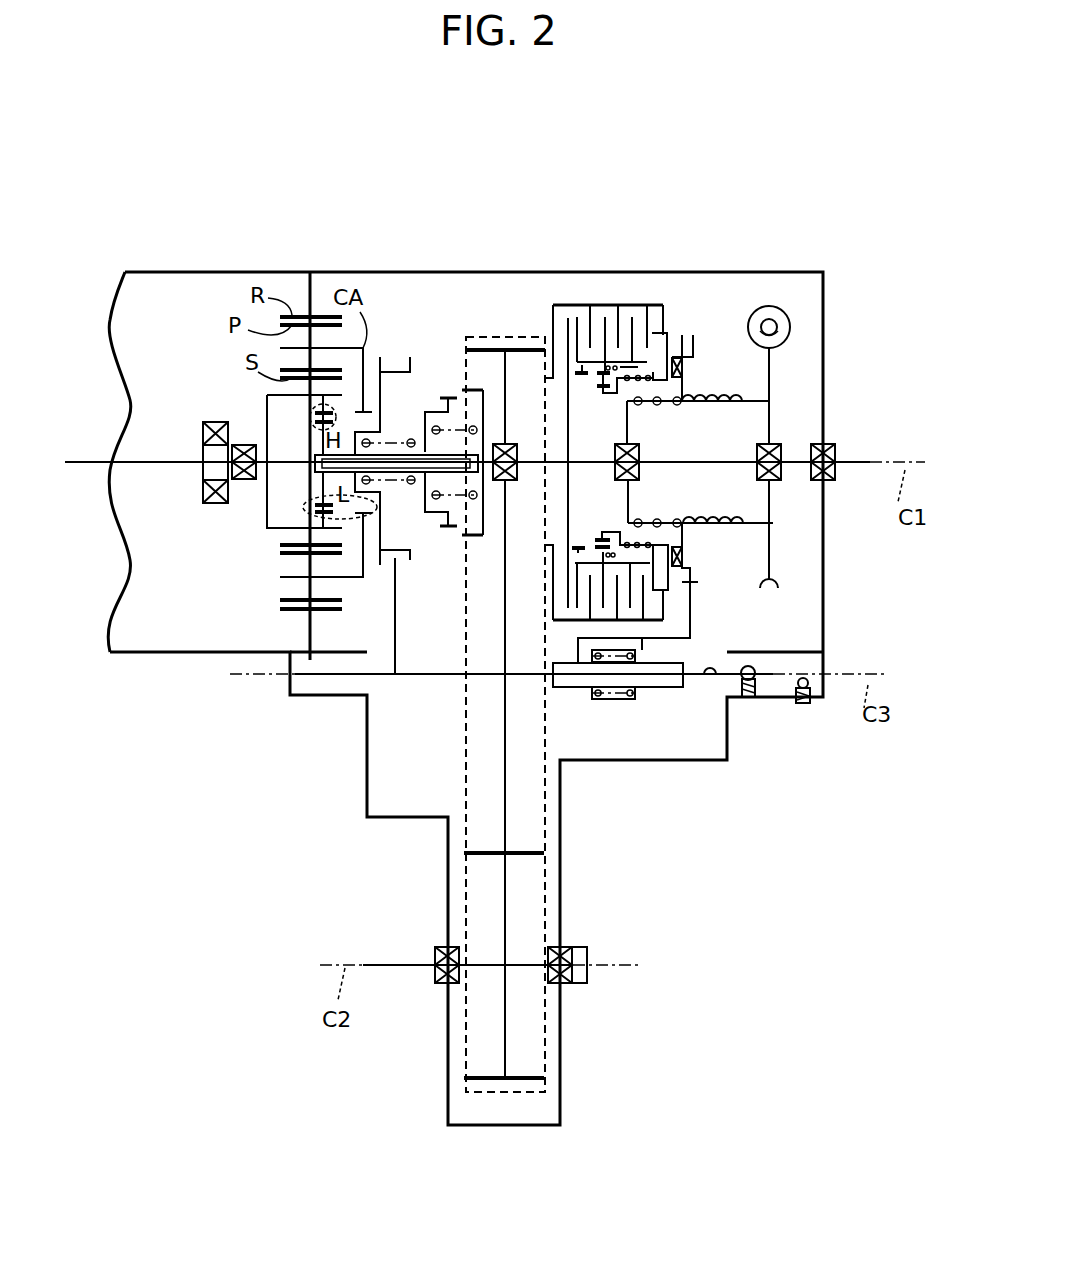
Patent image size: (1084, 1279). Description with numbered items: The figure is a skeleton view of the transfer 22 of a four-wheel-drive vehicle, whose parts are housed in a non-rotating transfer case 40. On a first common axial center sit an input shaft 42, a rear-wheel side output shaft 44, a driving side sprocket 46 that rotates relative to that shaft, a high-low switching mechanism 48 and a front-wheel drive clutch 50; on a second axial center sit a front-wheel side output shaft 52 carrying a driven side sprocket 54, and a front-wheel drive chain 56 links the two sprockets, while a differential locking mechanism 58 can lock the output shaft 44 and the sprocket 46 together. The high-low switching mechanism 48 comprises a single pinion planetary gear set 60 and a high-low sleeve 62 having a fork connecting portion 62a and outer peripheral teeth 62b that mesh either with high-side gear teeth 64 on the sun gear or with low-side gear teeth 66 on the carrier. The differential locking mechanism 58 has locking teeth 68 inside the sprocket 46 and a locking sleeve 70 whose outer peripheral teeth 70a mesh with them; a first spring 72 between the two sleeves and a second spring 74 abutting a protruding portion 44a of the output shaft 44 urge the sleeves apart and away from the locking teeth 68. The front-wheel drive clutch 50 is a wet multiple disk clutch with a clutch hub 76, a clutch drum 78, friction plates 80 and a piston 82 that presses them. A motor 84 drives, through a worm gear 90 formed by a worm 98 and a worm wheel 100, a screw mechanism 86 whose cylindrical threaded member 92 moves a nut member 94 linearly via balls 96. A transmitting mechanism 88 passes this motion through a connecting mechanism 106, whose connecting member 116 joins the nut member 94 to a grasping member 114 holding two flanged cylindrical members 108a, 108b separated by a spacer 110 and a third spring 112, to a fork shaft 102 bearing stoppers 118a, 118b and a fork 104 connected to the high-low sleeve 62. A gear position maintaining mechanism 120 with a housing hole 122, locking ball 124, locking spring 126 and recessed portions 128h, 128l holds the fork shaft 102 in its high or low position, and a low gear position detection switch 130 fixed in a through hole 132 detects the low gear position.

The transfer 22 is at (757, 130).
The transfer case 40 is at (228, 272).
The input shaft 42 is at (163, 462).
The rear-wheel side output shaft 44 is at (845, 462).
The protruding portion 44a is at (484, 402).
The driving side sprocket 46 is at (478, 350).
The high-low switching mechanism 48 is at (370, 196).
The front-wheel drive clutch 50 is at (603, 293).
The front-wheel side output shaft 52 is at (392, 963).
The driven side sprocket 54 is at (493, 855).
The front-wheel drive chain 56 is at (465, 1050).
The differential locking mechanism 58 is at (447, 351).
The planetary gear set 60 is at (310, 256).
The high-low sleeve 62 is at (378, 370).
The fork connecting portion 62a is at (396, 356).
The outer peripheral teeth 62b is at (373, 456).
The high-side gear teeth 64 is at (320, 415).
The low-side gear teeth 66 is at (370, 527).
The locking teeth 68 is at (466, 394).
The locking sleeve 70 is at (440, 412).
The outer peripheral teeth 70a is at (449, 397).
The first spring 72 is at (412, 483).
The second spring 74 is at (473, 503).
The clutch hub 76 is at (583, 388).
The clutch drum 78 is at (622, 305).
The friction plates 80 is at (660, 323).
The piston 82 is at (667, 335).
The motor 84 is at (757, 306).
The screw mechanism 86 is at (725, 327).
The transmitting mechanism 88 is at (706, 738).
The worm gear 90 is at (808, 289).
The cylindrical threaded member 92 is at (705, 395).
The nut member 94 is at (688, 383).
The balls 96 is at (645, 405).
The worm 98 is at (775, 319).
The worm wheel 100 is at (770, 370).
The fork shaft 102 is at (425, 676).
The fork 104 is at (395, 600).
The connecting mechanism 106 is at (712, 594).
The flanged cylindrical member 108a is at (575, 687).
The flanged cylindrical member 108b is at (640, 699).
The spacer 110 is at (607, 675).
The third spring 112 is at (627, 700).
The grasping member 114 is at (607, 637).
The connecting member 116 is at (690, 610).
The stopper 118a is at (553, 678).
The stopper 118b is at (690, 638).
The gear position maintaining mechanism 120 is at (765, 748).
The housing hole 122 is at (750, 698).
The locking ball 124 is at (738, 679).
The locking spring 126 is at (745, 698).
The recessed portion 128h is at (773, 675).
The recessed portion 128l is at (708, 673).
The low gear position detection switch 130 is at (807, 720).
The through hole 132 is at (807, 703).